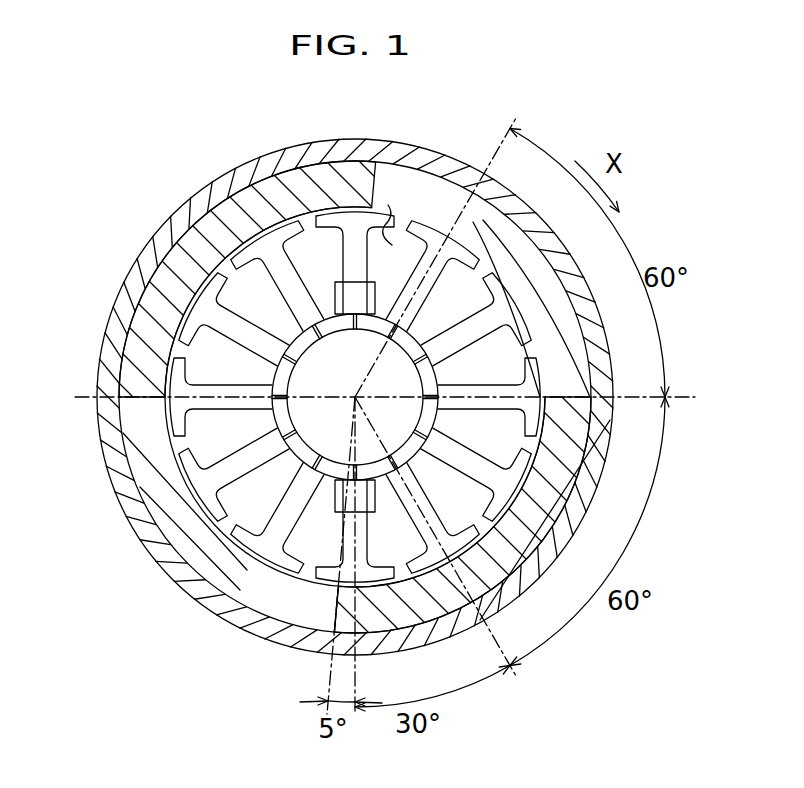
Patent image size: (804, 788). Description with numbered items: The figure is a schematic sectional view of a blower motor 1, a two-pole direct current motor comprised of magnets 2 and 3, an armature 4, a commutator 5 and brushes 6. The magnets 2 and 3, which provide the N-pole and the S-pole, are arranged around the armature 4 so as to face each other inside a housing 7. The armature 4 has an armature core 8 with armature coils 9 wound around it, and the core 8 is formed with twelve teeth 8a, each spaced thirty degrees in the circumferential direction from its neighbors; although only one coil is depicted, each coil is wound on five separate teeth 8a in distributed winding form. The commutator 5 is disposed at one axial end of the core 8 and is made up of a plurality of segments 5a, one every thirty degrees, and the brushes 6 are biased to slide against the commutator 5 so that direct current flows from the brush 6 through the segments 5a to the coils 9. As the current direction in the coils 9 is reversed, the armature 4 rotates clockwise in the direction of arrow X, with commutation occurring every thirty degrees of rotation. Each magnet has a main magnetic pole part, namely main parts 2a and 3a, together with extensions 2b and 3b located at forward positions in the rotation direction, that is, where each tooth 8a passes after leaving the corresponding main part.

The blower motor 1 is at (441, 140).
The magnet 2 is at (578, 458).
The main magnetic pole part 2a is at (513, 567).
The extension 2b is at (393, 645).
The magnet 3 is at (160, 518).
The main magnetic pole part 3a is at (145, 332).
The extension 3b is at (305, 183).
The armature 4 is at (528, 205).
The commutator 5 is at (393, 315).
The segments 5a is at (332, 315).
The brushes 6 is at (367, 320).
The housing 7 is at (197, 198).
The armature core 8 is at (384, 203).
The teeth 8a is at (385, 220).
The armature coils 9 is at (497, 360).